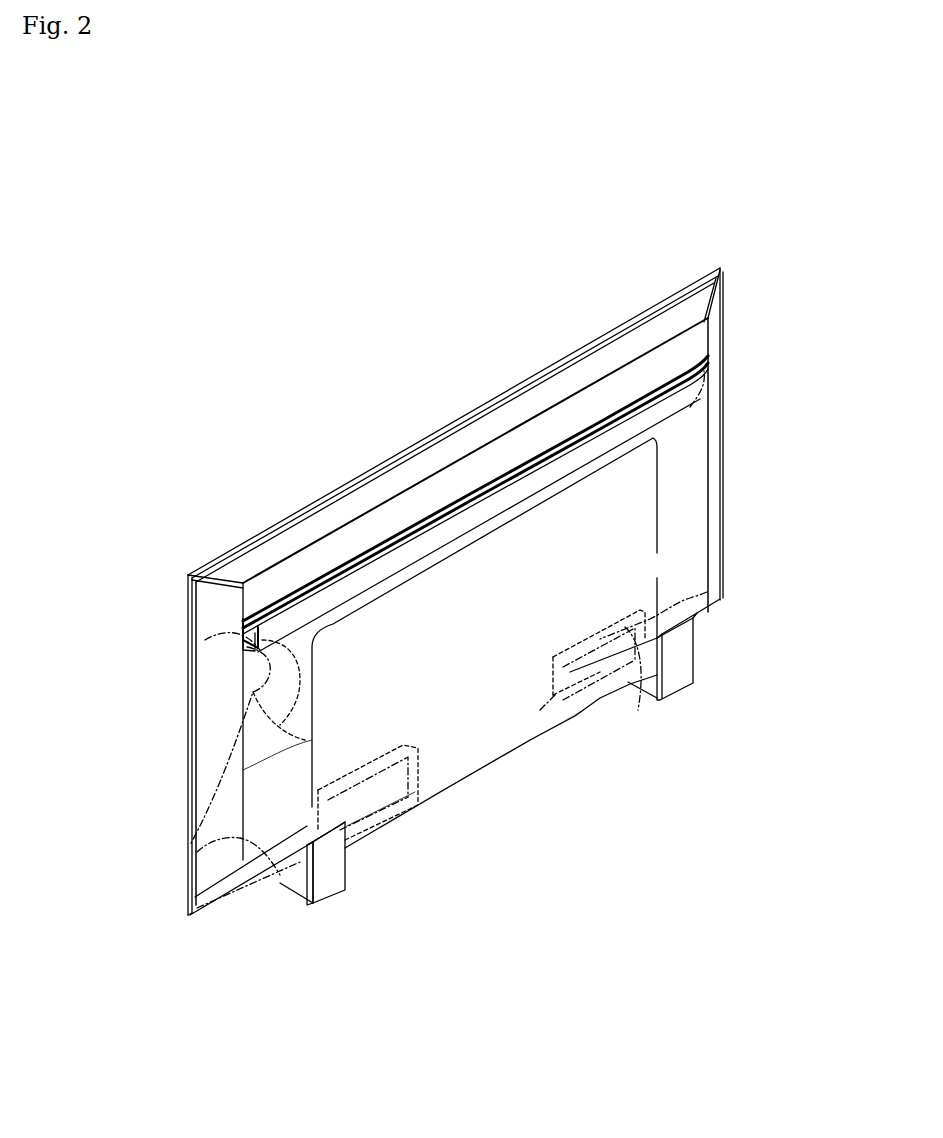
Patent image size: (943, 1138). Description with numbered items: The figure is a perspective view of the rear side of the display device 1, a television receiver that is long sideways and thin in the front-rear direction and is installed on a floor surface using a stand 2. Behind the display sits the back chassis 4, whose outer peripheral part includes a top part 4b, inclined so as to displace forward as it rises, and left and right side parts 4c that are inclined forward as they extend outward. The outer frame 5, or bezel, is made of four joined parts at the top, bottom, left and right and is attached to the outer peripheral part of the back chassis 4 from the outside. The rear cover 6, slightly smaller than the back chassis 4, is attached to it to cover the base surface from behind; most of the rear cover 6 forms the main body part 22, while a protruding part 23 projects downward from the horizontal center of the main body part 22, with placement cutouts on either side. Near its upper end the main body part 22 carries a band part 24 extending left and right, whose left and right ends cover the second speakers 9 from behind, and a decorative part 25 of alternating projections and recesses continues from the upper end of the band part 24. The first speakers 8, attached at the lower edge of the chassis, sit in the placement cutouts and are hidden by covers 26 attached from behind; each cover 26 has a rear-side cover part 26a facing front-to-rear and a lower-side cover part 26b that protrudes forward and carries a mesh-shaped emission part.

The display device 1 is at (250, 227).
The stand 2 is at (325, 877).
The back chassis 4 is at (440, 455).
The top part 4b is at (505, 418).
The side part 4c is at (723, 398).
The outer frame 5 is at (358, 477).
The rear cover 6 is at (500, 727).
The first speaker 8 is at (393, 790).
The second speaker 9 is at (690, 407).
The main body part 22 is at (620, 511).
The protruding part 23 is at (532, 725).
The band part 24 is at (250, 767).
The decorative part 25 is at (250, 639).
The cover 26 is at (420, 783).
The rear-side cover part 26a is at (370, 817).
The lower-side cover part 26b is at (250, 857).